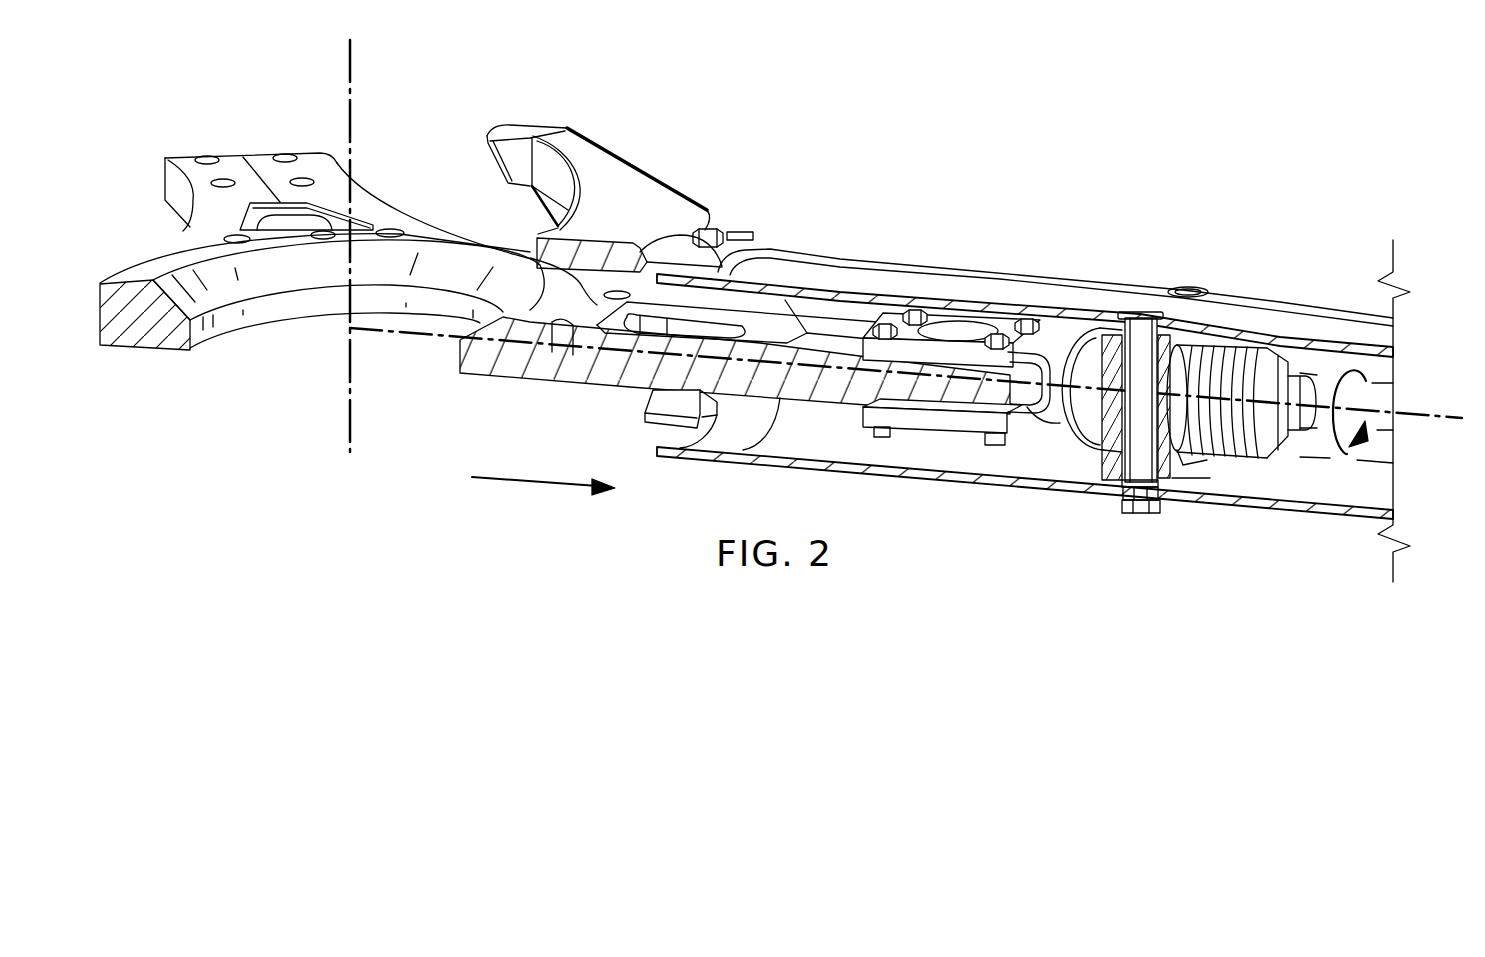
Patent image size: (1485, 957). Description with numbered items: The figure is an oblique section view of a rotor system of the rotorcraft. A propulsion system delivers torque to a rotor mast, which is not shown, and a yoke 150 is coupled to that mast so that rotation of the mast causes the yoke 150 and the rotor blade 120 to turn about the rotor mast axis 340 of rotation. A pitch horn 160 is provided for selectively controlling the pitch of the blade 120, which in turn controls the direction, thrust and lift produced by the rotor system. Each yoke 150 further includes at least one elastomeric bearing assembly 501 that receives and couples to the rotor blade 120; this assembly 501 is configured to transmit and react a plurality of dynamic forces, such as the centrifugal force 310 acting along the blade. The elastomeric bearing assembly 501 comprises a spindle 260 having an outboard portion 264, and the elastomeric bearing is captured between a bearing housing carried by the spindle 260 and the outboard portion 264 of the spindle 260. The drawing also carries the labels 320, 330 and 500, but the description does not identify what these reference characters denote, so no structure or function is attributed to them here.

The rotor blade 120 is at (970, 269).
The yoke 150 is at (258, 153).
The pitch horn 160 is at (640, 167).
The spindle 260 is at (1050, 423).
The outboard portion 264 is at (1317, 387).
The centrifugal force 310 is at (533, 487).
The rotation direction 320 is at (1345, 456).
The longitudinal axis 330 is at (1428, 420).
The rotor mast axis 340 is at (348, 60).
The pin assembly 500 is at (1088, 337).
The elastomeric bearing assembly 501 is at (1259, 333).